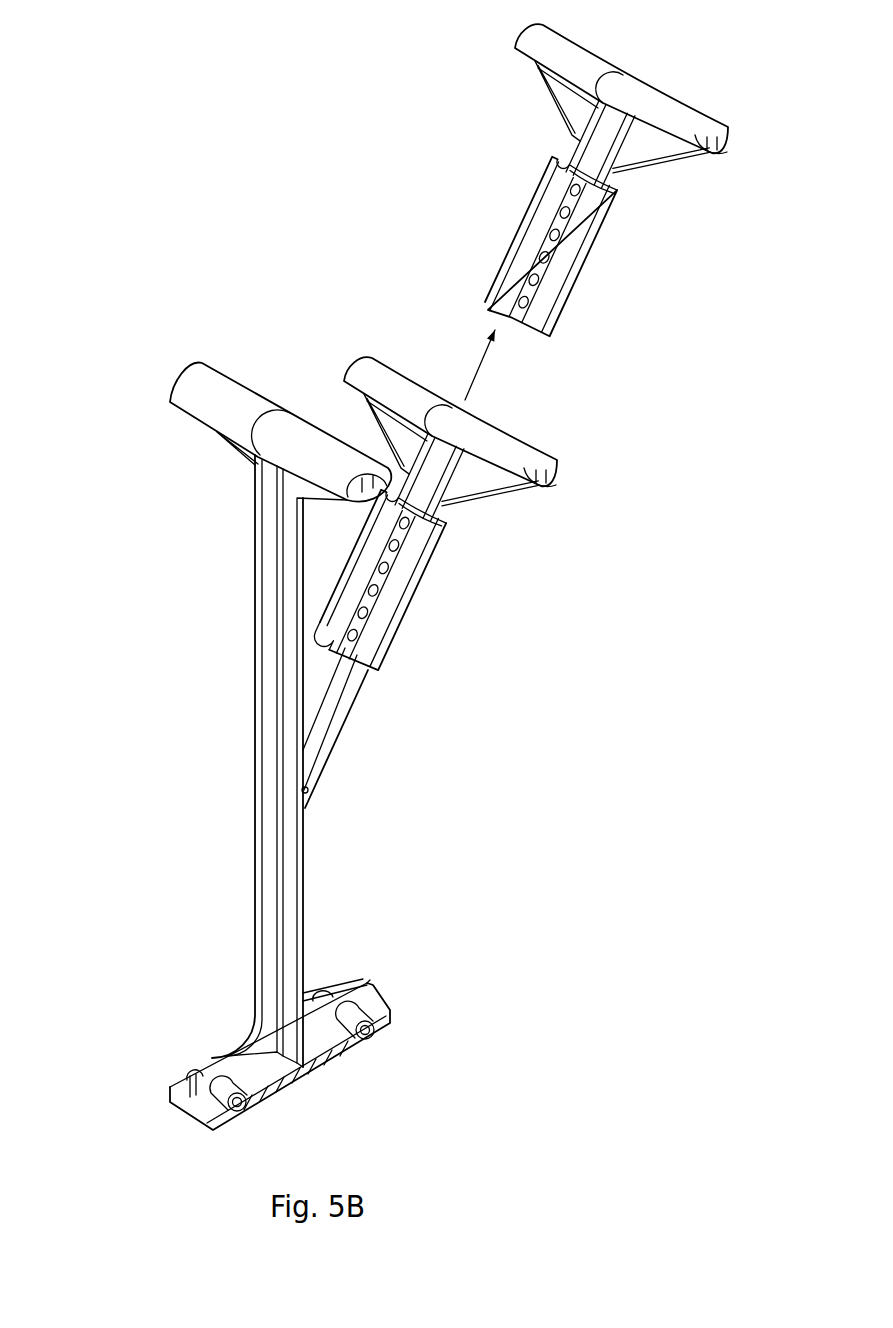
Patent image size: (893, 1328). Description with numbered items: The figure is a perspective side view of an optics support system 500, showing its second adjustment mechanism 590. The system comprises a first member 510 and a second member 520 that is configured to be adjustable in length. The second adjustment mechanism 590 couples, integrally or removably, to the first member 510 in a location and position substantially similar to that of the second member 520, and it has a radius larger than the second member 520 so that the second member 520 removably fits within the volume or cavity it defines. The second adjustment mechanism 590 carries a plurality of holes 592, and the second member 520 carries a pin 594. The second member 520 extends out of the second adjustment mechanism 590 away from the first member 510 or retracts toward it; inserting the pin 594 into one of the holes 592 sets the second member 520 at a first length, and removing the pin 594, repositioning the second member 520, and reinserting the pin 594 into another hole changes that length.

The optics support system 500 is at (75, 336).
The first member 510 is at (268, 843).
The second member 520 is at (552, 180).
The second adjustment mechanism 590 is at (431, 567).
The plurality of holes 592 is at (353, 643).
The pin 594 is at (558, 250).